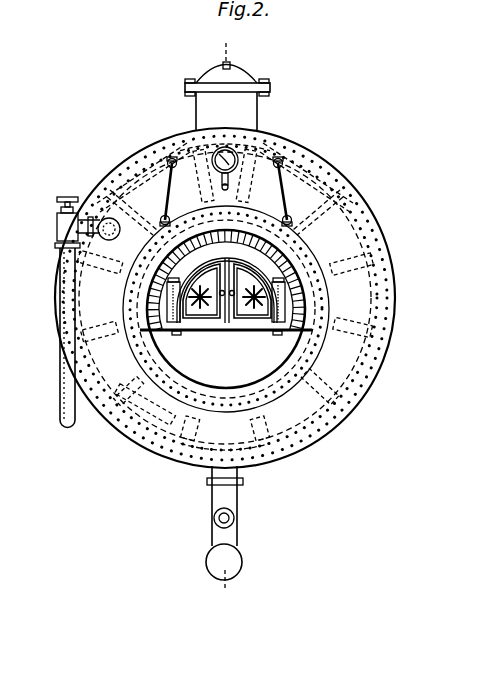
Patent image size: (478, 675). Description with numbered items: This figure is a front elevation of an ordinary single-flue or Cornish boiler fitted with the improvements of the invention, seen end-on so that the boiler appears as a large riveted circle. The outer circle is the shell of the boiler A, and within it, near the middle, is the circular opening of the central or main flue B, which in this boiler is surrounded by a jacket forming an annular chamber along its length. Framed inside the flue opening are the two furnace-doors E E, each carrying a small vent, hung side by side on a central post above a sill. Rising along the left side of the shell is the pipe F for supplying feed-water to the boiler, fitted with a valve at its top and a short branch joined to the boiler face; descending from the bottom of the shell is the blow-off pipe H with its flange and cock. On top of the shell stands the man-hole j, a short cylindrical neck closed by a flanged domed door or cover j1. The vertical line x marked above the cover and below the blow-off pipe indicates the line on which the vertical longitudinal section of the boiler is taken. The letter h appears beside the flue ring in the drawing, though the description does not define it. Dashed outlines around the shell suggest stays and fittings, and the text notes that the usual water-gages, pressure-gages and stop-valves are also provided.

The shell of the boiler A is at (225, 298).
The central or main flue B is at (226, 309).
The furnace-doors E is at (226, 306).
The feed-water pipe F is at (77, 312).
The blow-off pipe H is at (231, 523).
The furnace door frame ring h is at (226, 309).
The man-hole j is at (227, 98).
The door or cover j1 is at (246, 60).
The section line x x is at (226, 316).